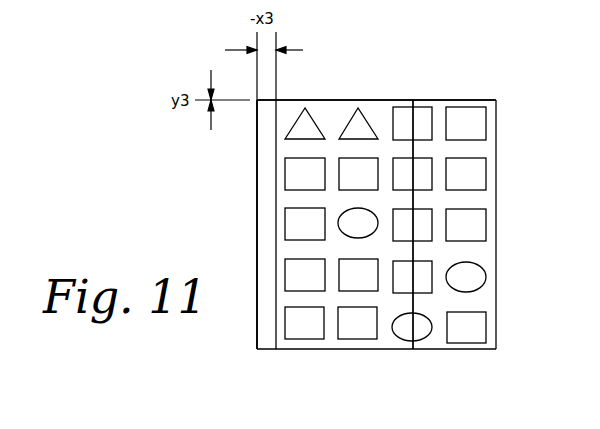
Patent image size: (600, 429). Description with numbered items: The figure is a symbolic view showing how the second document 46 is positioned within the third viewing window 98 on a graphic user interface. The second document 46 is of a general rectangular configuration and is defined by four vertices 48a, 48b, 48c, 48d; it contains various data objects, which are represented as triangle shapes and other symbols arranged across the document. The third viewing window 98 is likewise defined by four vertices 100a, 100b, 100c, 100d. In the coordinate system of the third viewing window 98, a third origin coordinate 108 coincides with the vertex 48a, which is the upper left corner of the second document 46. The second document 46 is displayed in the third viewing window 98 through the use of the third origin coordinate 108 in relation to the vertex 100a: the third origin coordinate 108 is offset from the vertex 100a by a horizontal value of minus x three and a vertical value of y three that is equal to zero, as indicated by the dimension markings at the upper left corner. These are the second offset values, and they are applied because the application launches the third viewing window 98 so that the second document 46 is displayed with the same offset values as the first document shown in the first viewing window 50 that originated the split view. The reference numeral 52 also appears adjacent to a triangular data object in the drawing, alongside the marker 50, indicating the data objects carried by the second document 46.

The second document 46 is at (458, 99).
The vertex 48a is at (277, 100).
The vertex 48b is at (496, 99).
The vertex 48c is at (496, 349).
The vertex 48d is at (276, 349).
The first viewing window 50 is at (313, 106).
The triangular marker 52 is at (358, 106).
The third viewing window 98 is at (256, 219).
The vertex 100a is at (257, 100).
The vertex 100b is at (420, 86).
The vertex 100c is at (413, 349).
The vertex 100d is at (257, 349).
The third origin coordinate 108 is at (376, 56).